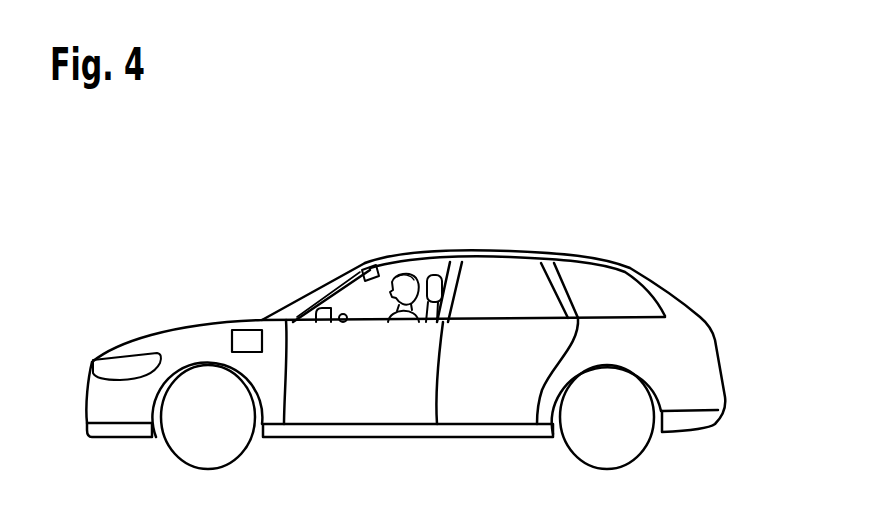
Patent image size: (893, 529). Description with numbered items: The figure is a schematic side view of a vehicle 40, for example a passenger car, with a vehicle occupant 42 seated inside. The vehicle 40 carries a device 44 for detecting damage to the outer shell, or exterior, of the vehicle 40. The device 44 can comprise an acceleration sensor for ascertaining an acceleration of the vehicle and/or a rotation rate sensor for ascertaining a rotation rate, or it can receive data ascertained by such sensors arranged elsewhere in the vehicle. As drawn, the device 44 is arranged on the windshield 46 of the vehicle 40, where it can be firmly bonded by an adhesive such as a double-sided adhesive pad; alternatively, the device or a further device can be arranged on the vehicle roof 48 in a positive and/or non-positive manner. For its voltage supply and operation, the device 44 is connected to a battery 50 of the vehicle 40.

The vehicle 40 is at (190, 276).
The vehicle occupant 42 is at (406, 271).
The device 44 is at (370, 263).
The windshield 46 is at (305, 297).
The vehicle roof 48 is at (480, 253).
The battery 50 is at (247, 330).